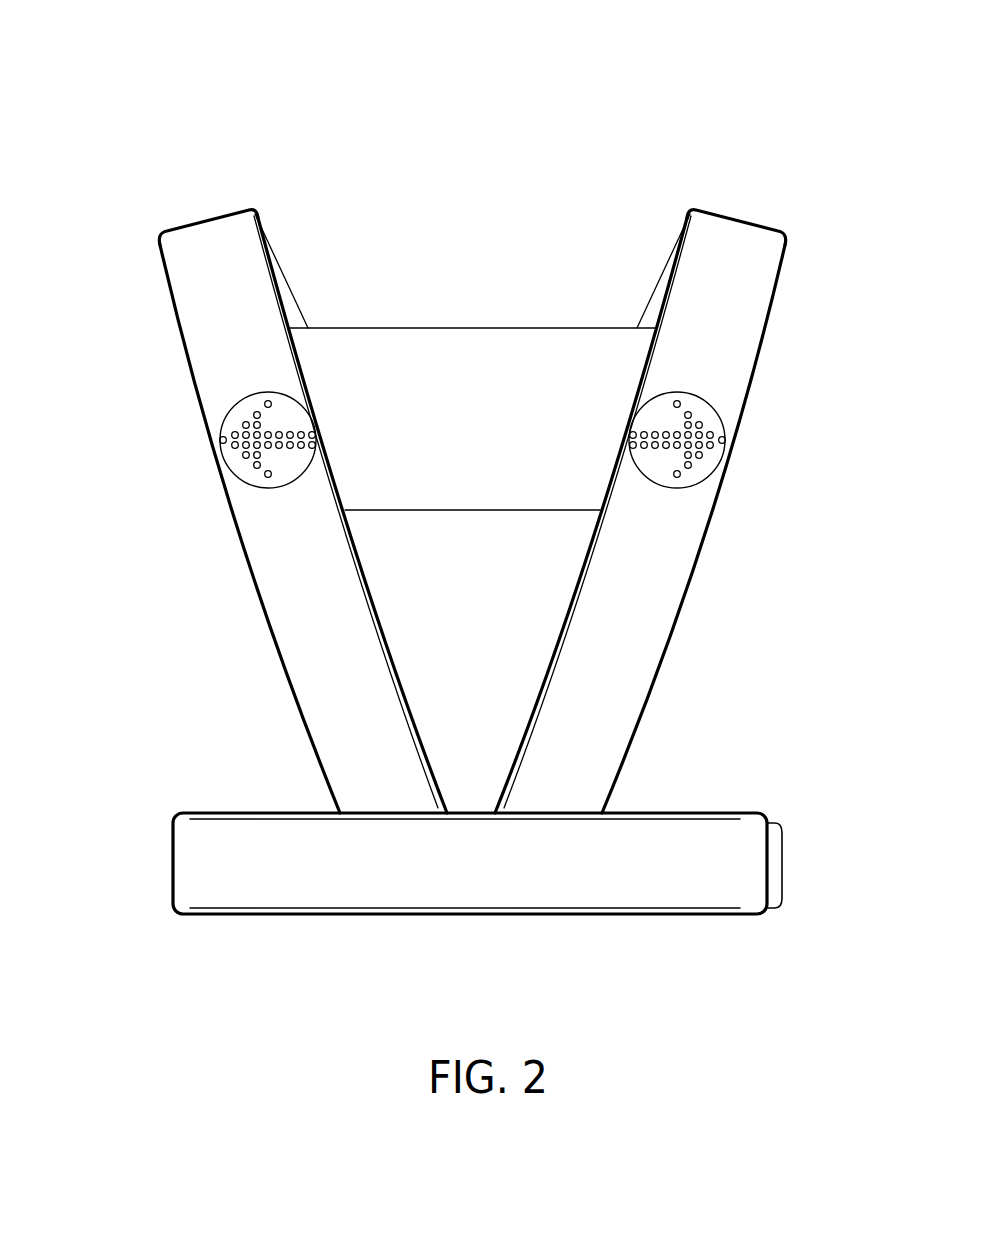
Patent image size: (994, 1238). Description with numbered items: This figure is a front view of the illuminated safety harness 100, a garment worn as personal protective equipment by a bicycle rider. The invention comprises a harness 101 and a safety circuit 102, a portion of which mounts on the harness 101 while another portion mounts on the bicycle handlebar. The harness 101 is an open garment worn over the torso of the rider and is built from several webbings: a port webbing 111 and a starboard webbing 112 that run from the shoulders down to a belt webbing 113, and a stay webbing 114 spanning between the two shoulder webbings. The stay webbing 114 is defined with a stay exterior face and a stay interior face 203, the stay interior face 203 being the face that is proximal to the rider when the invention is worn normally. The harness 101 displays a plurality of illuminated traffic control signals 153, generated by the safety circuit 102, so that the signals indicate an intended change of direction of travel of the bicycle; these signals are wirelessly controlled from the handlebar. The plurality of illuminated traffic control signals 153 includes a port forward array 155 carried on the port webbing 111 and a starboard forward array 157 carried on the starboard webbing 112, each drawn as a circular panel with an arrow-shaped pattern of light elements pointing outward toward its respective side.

The illuminated safety harness 100 is at (140, 115).
The harness 101 is at (780, 257).
The safety circuit 102 is at (773, 862).
The port webbing 111 is at (723, 235).
The starboard webbing 112 is at (223, 228).
The belt webbing 113 is at (472, 893).
The stay webbing 114 is at (460, 332).
The plurality of illuminated traffic control signals 153 is at (662, 397).
The port forward array 155 is at (712, 418).
The starboard forward array 157 is at (238, 466).
The stay interior face 203 is at (493, 490).